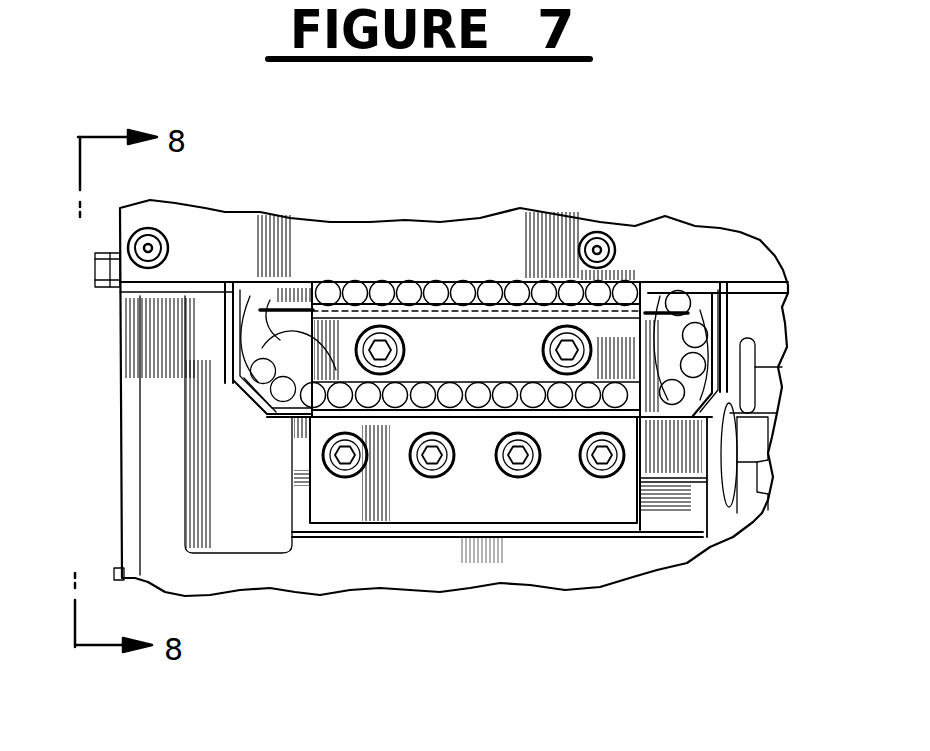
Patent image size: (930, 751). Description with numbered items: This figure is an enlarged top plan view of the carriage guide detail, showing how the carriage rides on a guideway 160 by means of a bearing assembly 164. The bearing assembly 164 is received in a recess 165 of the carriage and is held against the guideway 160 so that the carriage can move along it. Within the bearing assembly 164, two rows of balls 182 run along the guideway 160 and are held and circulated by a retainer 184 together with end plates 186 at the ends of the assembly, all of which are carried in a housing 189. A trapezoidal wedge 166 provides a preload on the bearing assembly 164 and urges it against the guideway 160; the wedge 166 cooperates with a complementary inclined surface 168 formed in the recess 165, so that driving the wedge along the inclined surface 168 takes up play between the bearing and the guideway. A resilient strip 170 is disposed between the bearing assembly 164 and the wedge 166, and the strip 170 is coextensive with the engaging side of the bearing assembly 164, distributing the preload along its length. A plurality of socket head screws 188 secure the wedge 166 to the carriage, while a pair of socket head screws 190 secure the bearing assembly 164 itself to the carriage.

The guideway 160 is at (490, 232).
The bearing assembly 164 is at (692, 268).
The recess 165 is at (688, 446).
The trapezoidal wedge 166 is at (638, 510).
The inclined surface 168 is at (693, 517).
The resilient strip 170 is at (560, 423).
The balls 182 is at (230, 377).
The retainer 184 is at (274, 418).
The end plates 186 is at (225, 334).
The socket head screws 188 is at (431, 478).
The housing 189 is at (282, 418).
The socket head screws 190 is at (541, 350).